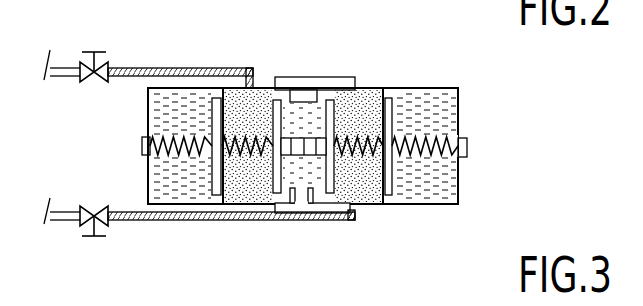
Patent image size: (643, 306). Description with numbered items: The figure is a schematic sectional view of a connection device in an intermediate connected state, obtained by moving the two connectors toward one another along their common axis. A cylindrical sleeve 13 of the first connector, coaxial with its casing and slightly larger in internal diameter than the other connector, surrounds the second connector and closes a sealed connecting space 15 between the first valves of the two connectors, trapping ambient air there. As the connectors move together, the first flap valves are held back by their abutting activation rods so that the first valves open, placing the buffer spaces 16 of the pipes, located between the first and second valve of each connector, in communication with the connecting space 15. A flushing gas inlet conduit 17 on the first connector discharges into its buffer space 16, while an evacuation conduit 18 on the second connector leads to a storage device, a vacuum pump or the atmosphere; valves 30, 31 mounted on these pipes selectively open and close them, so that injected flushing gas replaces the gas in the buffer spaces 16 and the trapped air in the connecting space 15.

The cylindrical sleeve 13 is at (308, 82).
The sealed connecting space 15 is at (303, 195).
The buffer space 16 is at (254, 98).
The flushing gas inlet conduit 17 is at (190, 68).
The evacuation conduit 18 is at (334, 220).
The valve 30 is at (105, 64).
The valve 31 is at (106, 226).